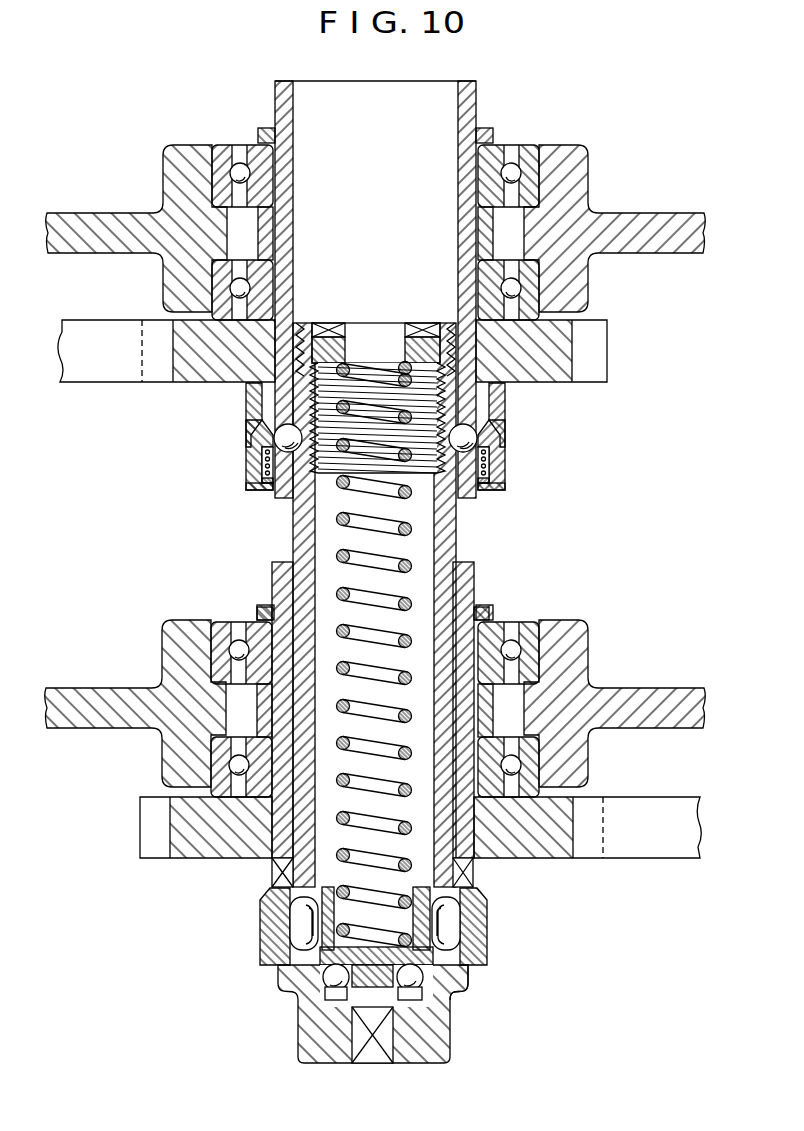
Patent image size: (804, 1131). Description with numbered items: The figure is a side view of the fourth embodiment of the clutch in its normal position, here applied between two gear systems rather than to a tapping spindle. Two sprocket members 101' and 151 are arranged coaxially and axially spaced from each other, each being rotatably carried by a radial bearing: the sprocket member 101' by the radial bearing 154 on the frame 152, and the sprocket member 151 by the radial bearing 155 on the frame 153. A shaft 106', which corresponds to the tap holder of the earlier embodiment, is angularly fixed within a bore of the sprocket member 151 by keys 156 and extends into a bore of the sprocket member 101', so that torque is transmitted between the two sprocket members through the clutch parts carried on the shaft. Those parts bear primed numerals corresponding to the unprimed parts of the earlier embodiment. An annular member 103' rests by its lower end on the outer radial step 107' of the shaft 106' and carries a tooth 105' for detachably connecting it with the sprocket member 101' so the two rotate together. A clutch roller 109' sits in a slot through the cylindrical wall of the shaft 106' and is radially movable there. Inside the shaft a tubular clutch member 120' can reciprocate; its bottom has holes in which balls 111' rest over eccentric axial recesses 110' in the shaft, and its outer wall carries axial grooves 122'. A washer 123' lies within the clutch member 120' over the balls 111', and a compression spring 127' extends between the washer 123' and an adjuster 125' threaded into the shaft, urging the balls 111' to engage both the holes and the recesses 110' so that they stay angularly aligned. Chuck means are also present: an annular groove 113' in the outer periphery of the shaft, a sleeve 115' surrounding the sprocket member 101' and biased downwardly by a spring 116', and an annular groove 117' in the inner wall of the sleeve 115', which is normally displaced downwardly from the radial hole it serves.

The sprocket member 101' is at (420, 852).
The annular member 103' is at (505, 926).
The tooth 105' is at (411, 882).
The shaft 106' is at (429, 636).
The outer radial step 107' is at (500, 972).
The clutch roller 109' is at (230, 924).
The axial recess 110' is at (316, 1014).
The ball 111' is at (436, 982).
The annular groove 113' is at (413, 469).
The sleeve 115' is at (405, 438).
The spring 116' is at (405, 503).
The annular groove 117' is at (405, 436).
The clutch member 120' is at (451, 1029).
The axial groove 122' is at (299, 961).
The washer 123' is at (312, 923).
The adjuster 125' is at (323, 442).
The compression spring 127' is at (451, 654).
The sprocket member 151 is at (552, 368).
The frame 152 is at (603, 706).
The frame 153 is at (93, 225).
The radial bearing 154 is at (526, 632).
The radial bearing 155 is at (222, 150).
The key 156 is at (290, 352).